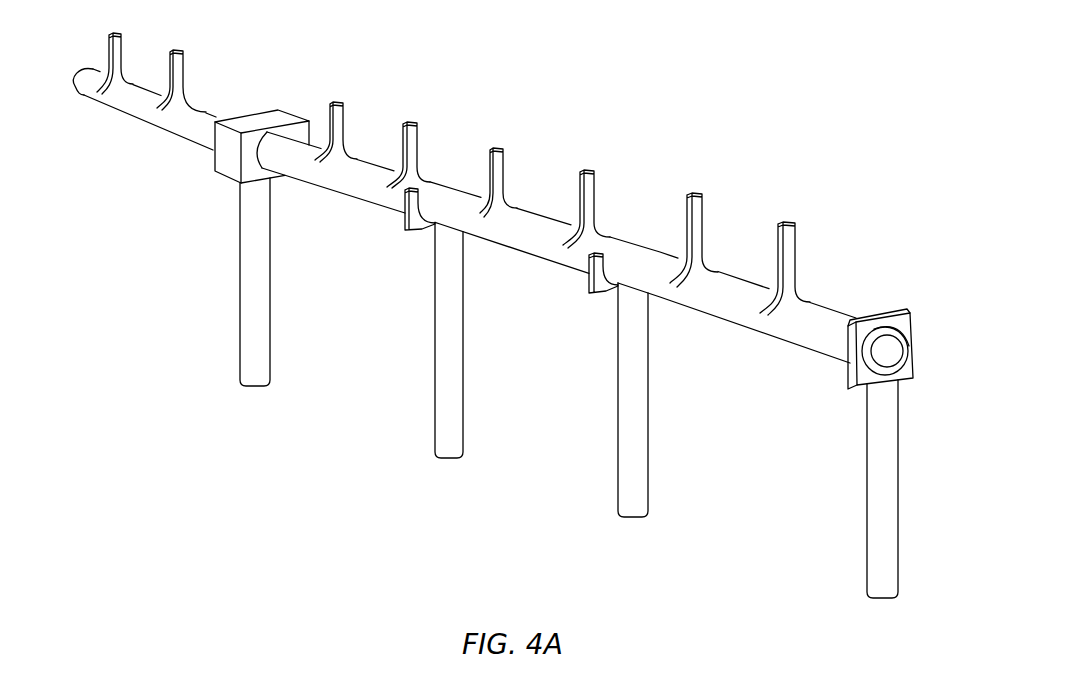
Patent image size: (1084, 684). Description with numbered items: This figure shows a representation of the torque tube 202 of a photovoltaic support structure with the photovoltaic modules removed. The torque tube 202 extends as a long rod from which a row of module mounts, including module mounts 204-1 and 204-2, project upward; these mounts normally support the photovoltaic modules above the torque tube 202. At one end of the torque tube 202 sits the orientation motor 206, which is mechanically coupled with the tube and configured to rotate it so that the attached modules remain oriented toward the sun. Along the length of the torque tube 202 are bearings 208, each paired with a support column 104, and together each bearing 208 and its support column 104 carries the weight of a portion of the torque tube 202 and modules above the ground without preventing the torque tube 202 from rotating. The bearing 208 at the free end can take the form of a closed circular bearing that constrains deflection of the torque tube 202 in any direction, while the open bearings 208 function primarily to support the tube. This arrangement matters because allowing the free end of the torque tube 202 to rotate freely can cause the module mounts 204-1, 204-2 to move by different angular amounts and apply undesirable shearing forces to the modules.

The support column 104 is at (240, 307).
The torque tube 202 is at (133, 117).
The module mount 204-1 is at (505, 152).
The module mount 204-2 is at (796, 247).
The orientation motor 206 is at (221, 178).
The bearing 208 is at (421, 231).